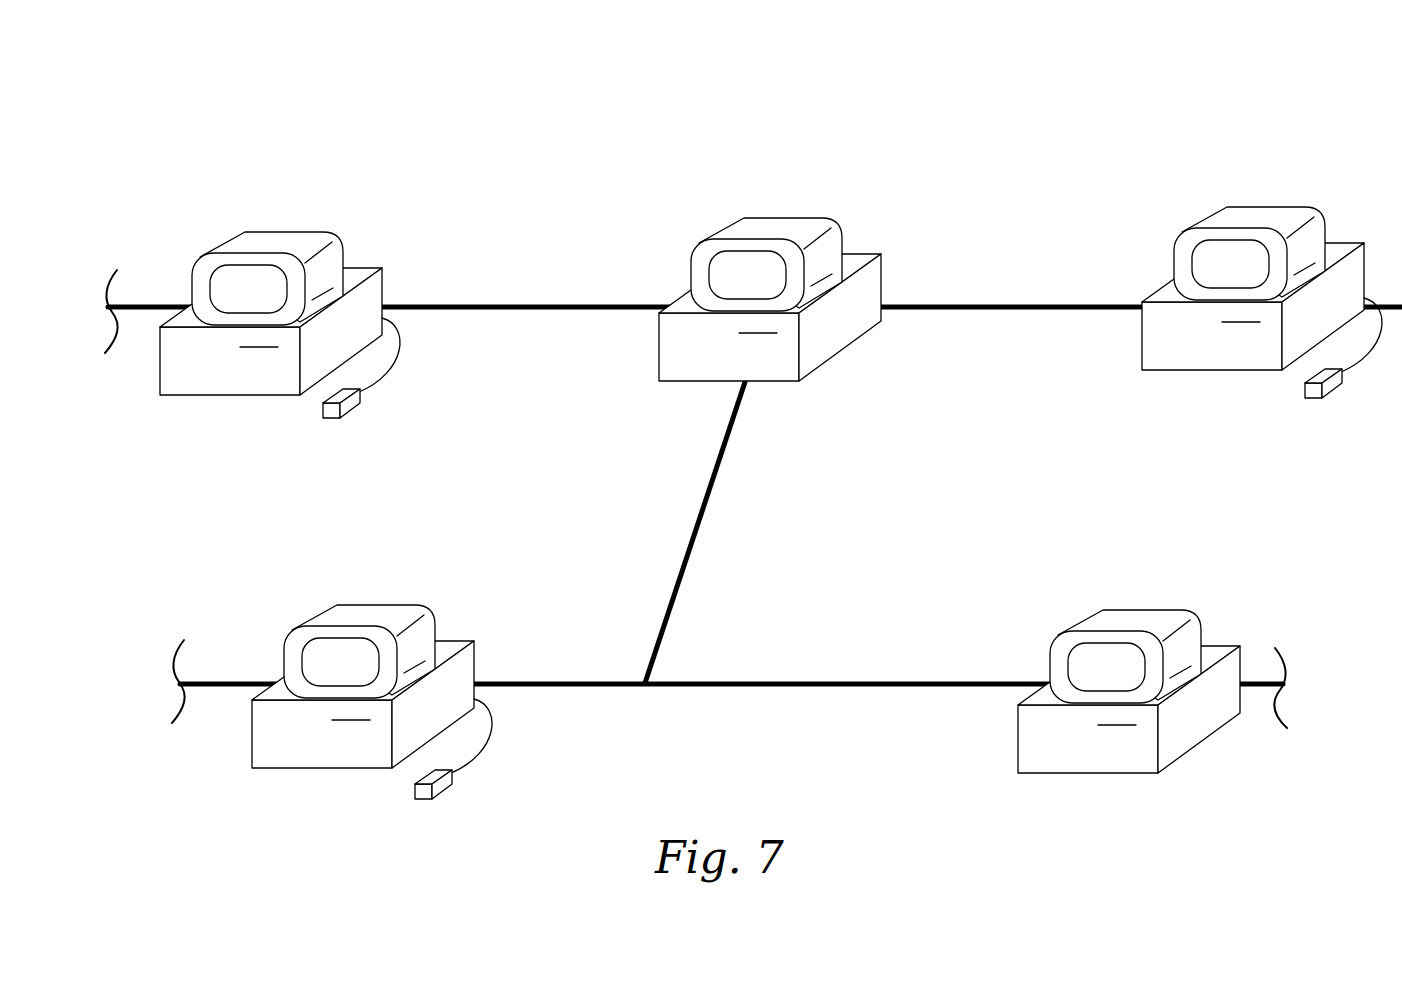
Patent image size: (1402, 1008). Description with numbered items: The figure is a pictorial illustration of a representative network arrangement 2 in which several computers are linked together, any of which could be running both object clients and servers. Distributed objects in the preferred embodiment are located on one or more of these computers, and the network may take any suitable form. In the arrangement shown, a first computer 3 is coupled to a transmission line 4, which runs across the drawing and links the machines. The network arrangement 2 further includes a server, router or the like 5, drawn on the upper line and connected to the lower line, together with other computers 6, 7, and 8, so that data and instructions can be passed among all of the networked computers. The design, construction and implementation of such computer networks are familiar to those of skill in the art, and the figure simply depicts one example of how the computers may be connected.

The network arrangement 2 is at (753, 436).
The first computer 3 is at (345, 268).
The transmission line 4 is at (477, 308).
The server, router or the like 5 is at (863, 250).
The other computer 6 is at (450, 637).
The other computer 7 is at (1215, 643).
The other computer 8 is at (1142, 350).